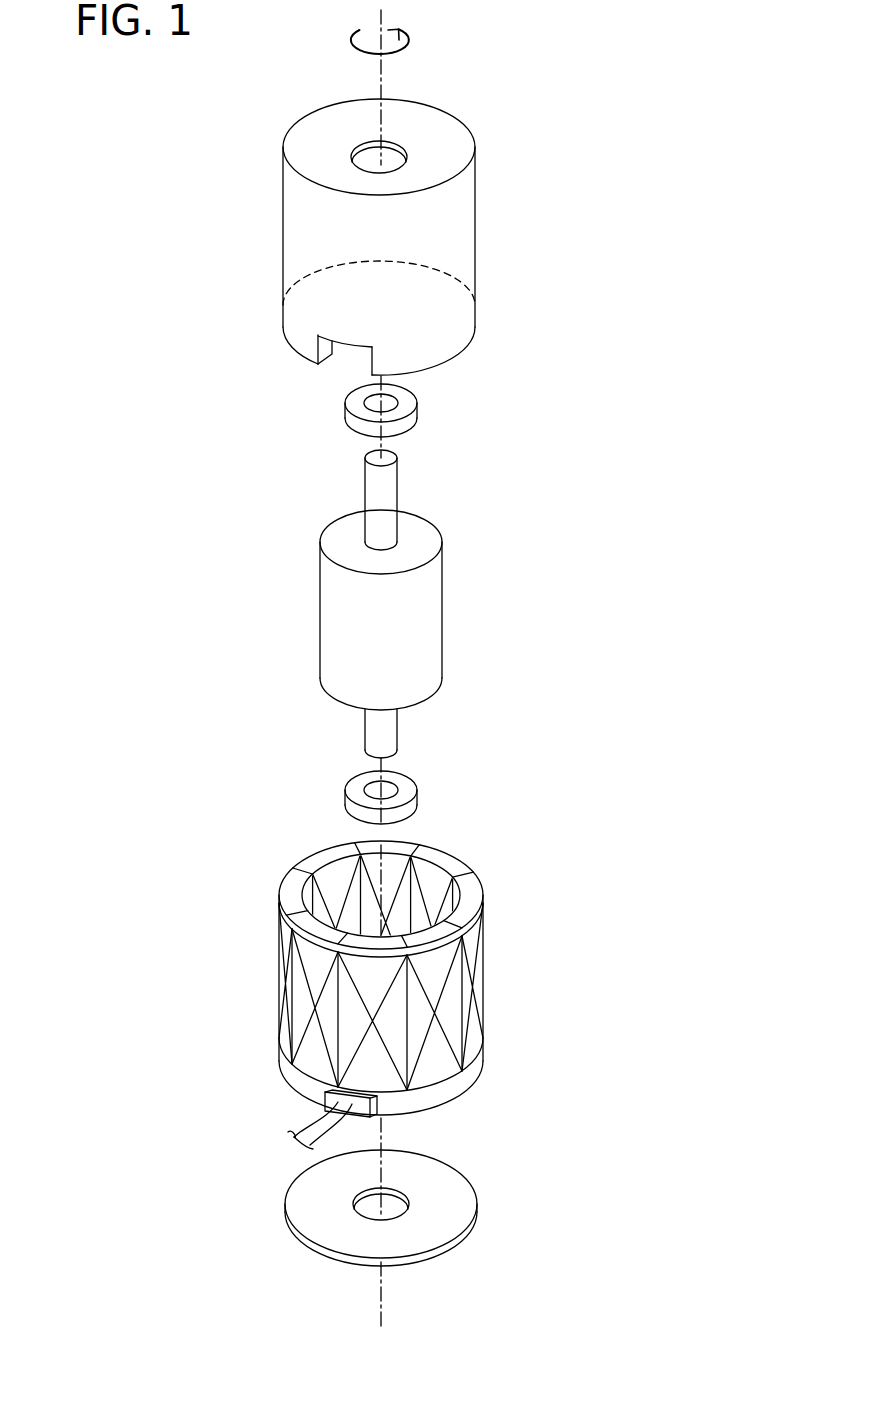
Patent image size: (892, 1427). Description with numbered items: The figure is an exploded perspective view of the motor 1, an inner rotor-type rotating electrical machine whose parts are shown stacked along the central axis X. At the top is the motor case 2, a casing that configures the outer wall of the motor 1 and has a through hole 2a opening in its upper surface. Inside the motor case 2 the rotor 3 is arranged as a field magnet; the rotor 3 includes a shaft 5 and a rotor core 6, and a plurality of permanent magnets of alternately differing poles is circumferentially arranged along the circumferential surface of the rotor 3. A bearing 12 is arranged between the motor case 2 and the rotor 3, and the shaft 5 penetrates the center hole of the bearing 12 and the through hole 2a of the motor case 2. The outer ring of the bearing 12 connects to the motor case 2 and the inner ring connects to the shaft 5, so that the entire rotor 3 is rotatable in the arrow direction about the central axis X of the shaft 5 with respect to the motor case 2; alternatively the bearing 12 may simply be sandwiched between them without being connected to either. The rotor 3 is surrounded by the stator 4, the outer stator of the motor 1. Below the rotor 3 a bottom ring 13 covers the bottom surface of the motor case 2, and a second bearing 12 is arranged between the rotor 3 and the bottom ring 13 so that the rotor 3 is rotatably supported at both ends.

The motor 1 is at (700, 98).
The motor case 2 is at (458, 241).
The through hole 2a is at (406, 146).
The rotor 3 is at (463, 612).
The stator 4 is at (503, 968).
The shaft 5 is at (387, 488).
The rotor core 6 is at (333, 623).
The bearing 12 is at (418, 413).
The bottom ring 13 is at (477, 1193).
The central axis X is at (382, 81).